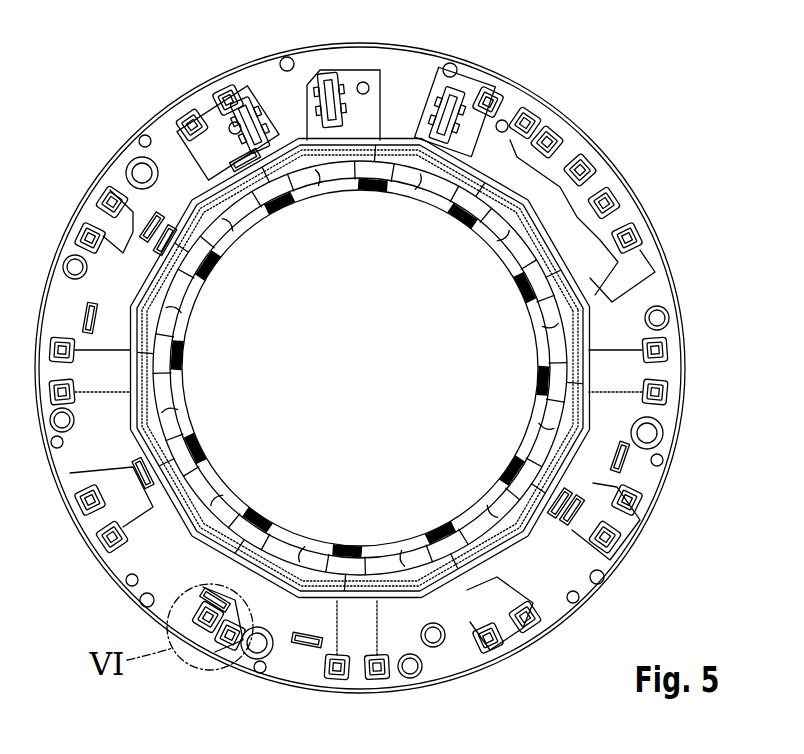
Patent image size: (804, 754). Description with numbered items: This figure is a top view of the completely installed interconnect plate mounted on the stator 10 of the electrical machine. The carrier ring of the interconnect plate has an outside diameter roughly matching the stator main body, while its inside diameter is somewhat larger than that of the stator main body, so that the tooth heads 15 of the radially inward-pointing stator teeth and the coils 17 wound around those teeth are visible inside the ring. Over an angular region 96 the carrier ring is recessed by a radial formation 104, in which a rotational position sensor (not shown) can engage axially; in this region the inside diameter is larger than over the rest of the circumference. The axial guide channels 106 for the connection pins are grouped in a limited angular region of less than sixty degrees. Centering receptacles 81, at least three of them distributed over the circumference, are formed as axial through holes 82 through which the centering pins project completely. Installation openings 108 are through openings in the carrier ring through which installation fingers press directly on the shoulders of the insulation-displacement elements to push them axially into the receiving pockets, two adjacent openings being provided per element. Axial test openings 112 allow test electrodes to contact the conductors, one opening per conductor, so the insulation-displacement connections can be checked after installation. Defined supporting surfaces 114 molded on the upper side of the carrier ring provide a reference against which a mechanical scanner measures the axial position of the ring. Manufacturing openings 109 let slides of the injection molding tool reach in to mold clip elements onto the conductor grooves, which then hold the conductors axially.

The stator 10 is at (639, 63).
The tooth head 15 is at (360, 368).
The coil 17 is at (360, 368).
The centering receptacle 81 is at (412, 398).
The axial through hole 82 is at (394, 408).
The angular region 96 is at (499, 234).
The radial formation 104 is at (409, 124).
The axial guide channel 106 is at (347, 85).
The installation opening 108 is at (367, 439).
The manufacturing opening 109 is at (80, 480).
The axial test opening 112 is at (362, 70).
The supporting surface 114 is at (398, 421).